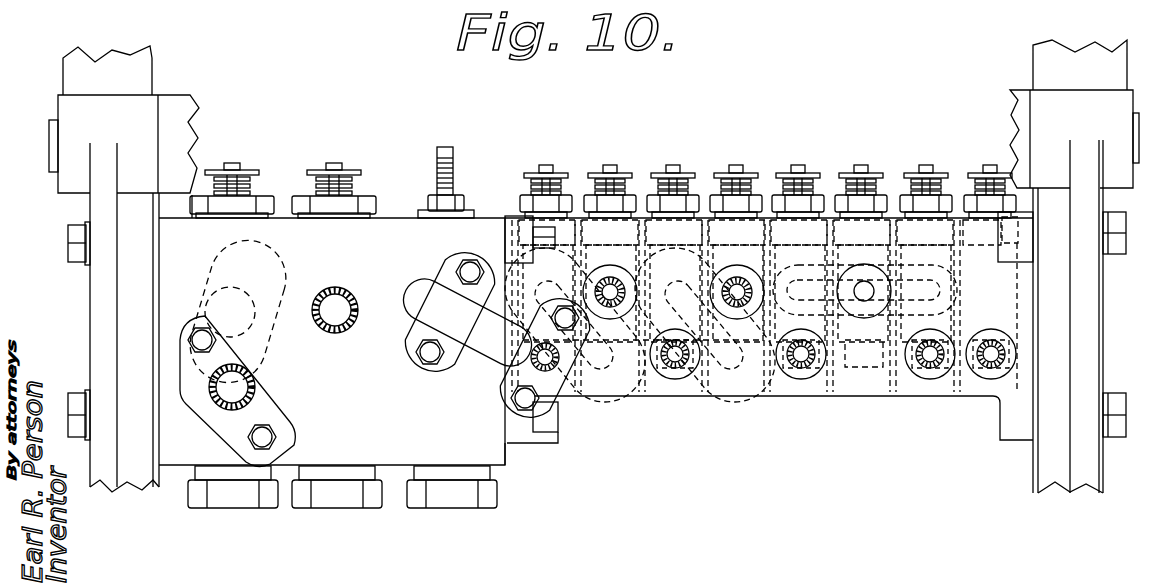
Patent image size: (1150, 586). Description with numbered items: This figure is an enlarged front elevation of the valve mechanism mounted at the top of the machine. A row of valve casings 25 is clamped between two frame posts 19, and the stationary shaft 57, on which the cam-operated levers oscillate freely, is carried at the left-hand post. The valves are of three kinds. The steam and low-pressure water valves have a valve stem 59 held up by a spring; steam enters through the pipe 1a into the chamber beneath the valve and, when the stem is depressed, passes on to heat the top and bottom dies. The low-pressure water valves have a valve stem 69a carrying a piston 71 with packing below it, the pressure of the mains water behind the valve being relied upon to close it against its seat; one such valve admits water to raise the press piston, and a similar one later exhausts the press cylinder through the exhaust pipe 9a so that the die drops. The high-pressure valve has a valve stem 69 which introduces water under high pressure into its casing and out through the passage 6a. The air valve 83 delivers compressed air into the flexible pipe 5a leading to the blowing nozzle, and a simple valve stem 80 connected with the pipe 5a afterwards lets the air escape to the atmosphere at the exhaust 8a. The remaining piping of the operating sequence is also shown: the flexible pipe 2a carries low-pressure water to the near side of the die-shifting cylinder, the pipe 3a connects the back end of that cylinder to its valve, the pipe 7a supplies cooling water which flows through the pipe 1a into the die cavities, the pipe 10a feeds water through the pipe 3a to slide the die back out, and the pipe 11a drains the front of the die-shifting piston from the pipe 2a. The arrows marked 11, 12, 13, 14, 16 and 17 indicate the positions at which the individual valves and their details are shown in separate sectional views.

The frame post 19 is at (102, 308).
The stationary shaft 57 is at (49, 150).
The main valve block 11 is at (332, 140).
The mounting bolt assembly 16 is at (233, 341).
The valve stem 69 is at (234, 170).
The piston 71 is at (428, 213).
The valve stem 69a is at (453, 186).
The bolt and rocker flange 17 is at (480, 271).
The flexible pipe 2a is at (530, 370).
The valve chamber 25 is at (508, 458).
The exhaust pipe 9a is at (344, 284).
The pipe or passage 6a is at (255, 395).
The valve section 13 is at (857, 165).
The valve section 12 is at (899, 281).
The end valve section 14 is at (993, 286).
The valve stem 80 is at (860, 175).
The valve stem 59 is at (925, 173).
The valve 83 is at (987, 173).
The pipe 11a is at (616, 298).
The pipe 3a is at (736, 300).
The air exhaust 8a is at (863, 300).
The pipe 10a is at (677, 368).
The pipe 7a is at (803, 368).
The pipe 1a is at (926, 360).
The flexible pipe 5a is at (991, 347).